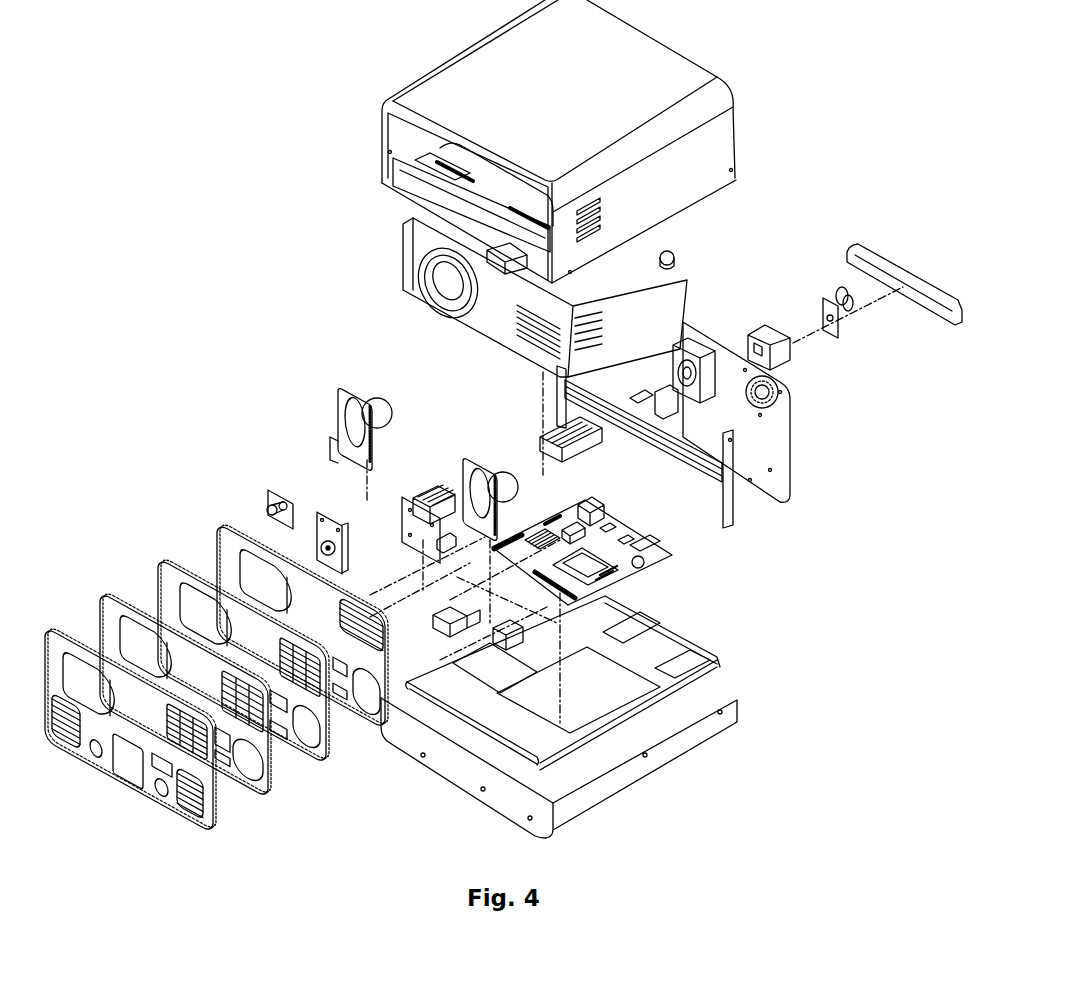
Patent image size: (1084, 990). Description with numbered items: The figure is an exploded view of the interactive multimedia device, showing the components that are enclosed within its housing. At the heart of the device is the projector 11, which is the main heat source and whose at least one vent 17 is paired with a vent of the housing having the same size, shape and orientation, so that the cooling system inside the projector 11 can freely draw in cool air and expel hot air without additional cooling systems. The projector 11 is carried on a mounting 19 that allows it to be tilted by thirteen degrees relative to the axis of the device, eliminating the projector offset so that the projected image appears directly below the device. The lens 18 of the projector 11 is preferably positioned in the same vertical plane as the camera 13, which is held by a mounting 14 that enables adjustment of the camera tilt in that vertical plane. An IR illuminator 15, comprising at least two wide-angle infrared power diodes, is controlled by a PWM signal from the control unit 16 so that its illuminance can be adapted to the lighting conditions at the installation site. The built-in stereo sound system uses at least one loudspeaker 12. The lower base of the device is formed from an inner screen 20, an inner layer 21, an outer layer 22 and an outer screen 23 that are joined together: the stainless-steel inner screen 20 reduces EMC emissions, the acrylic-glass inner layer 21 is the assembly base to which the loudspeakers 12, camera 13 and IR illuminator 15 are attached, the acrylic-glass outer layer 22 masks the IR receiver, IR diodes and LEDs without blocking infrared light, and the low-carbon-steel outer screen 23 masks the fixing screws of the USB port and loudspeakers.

The projector 11 is at (508, 297).
The loudspeaker 12 is at (503, 473).
The camera 13 is at (277, 512).
The mounting of camera 14 is at (318, 555).
The IR illuminator 15 is at (417, 522).
The control unit 16 is at (573, 450).
The vent of projector 17 is at (590, 343).
The lens of projector 18 is at (453, 286).
The mounting of projector 19 is at (468, 193).
The inner screen 20 is at (370, 730).
The inner layer 21 is at (320, 765).
The outer layer 22 is at (260, 798).
The outer screen 23 is at (203, 825).